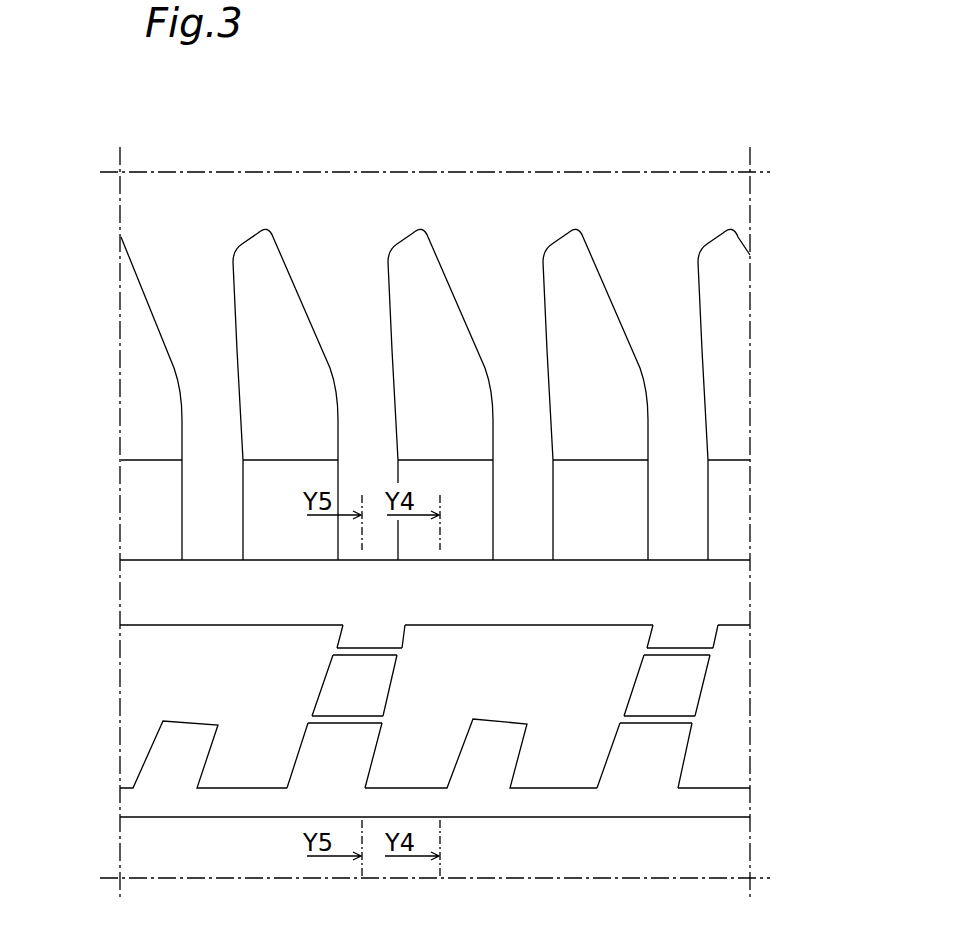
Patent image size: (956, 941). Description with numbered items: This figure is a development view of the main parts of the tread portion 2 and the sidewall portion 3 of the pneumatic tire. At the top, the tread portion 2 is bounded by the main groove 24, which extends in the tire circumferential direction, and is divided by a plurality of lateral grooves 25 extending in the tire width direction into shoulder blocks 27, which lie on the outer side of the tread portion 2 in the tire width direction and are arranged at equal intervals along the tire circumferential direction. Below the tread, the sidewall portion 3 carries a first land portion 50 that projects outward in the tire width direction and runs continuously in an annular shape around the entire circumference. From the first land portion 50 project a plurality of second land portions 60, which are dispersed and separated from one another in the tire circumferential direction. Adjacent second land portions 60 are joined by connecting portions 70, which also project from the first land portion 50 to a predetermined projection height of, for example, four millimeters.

The tread portion 2 is at (482, 366).
The sidewall portion 3 is at (432, 715).
The main groove 24 is at (574, 197).
The lateral groove 25 is at (675, 358).
The shoulder block 27 is at (735, 405).
The first land portion 50 is at (735, 592).
The second land portion 60 is at (150, 684).
The connecting portion 70 is at (365, 648).